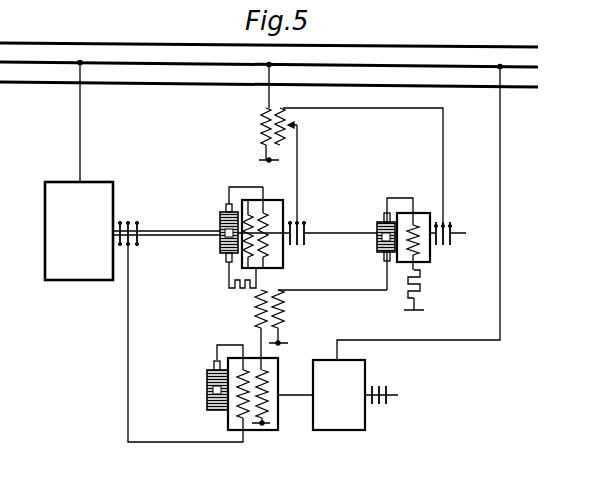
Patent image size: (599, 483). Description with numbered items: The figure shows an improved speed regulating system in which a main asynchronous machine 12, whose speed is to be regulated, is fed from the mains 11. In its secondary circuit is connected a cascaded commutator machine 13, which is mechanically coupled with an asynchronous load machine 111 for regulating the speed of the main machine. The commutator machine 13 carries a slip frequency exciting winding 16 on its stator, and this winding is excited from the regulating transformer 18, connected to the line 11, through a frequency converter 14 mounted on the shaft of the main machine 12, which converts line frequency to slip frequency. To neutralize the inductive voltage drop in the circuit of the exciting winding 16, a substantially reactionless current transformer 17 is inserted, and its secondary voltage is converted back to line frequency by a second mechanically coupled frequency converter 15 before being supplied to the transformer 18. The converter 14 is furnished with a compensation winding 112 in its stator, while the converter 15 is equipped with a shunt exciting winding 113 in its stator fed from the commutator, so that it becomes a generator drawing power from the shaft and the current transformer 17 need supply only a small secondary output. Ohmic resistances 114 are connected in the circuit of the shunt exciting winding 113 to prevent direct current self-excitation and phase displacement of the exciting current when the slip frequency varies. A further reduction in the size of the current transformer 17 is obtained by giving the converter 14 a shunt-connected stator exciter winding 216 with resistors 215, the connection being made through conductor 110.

The mains 11 is at (281, 65).
The main asynchronous machine 12 is at (96, 190).
The cascaded commutator machine 13 is at (279, 421).
The frequency converter 14 is at (268, 206).
The second frequency converter 15 is at (431, 257).
The exciting winding 16 is at (265, 375).
The current transformer 17 is at (286, 307).
The regulating transformer 18 is at (264, 120).
The conductor 110 is at (245, 424).
The asynchronous load machine 111 is at (366, 421).
The compensation winding 112 is at (268, 246).
The shunt exciting winding 113 is at (412, 215).
The ohmic resistances 114 is at (420, 296).
The resistors 215 is at (240, 291).
The stator exciter winding 216 is at (252, 203).